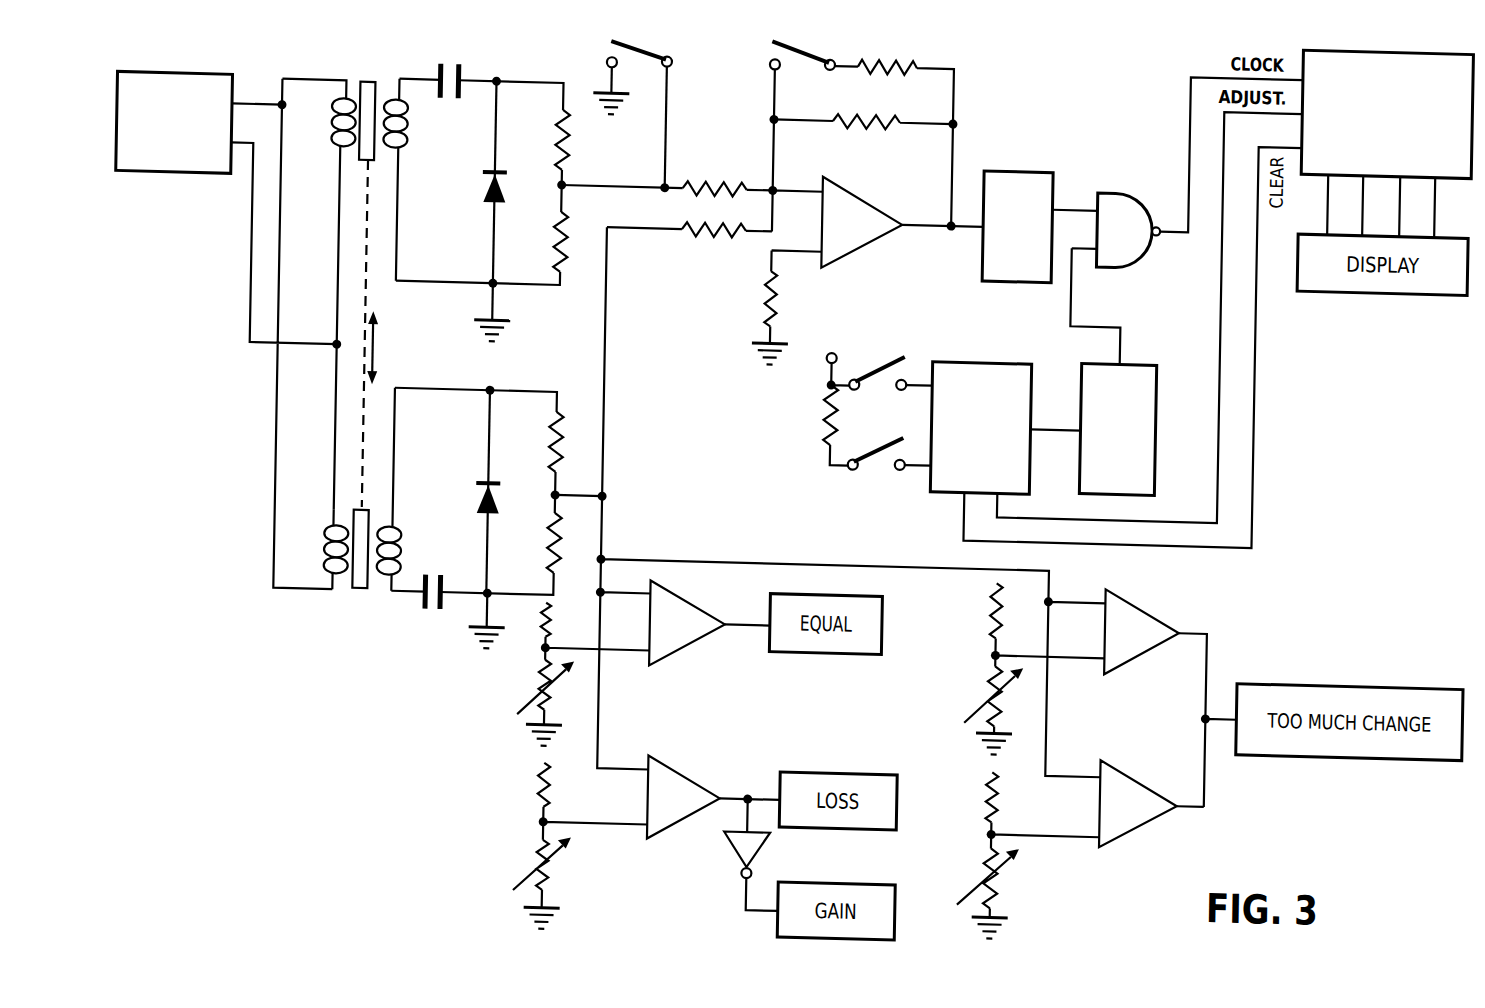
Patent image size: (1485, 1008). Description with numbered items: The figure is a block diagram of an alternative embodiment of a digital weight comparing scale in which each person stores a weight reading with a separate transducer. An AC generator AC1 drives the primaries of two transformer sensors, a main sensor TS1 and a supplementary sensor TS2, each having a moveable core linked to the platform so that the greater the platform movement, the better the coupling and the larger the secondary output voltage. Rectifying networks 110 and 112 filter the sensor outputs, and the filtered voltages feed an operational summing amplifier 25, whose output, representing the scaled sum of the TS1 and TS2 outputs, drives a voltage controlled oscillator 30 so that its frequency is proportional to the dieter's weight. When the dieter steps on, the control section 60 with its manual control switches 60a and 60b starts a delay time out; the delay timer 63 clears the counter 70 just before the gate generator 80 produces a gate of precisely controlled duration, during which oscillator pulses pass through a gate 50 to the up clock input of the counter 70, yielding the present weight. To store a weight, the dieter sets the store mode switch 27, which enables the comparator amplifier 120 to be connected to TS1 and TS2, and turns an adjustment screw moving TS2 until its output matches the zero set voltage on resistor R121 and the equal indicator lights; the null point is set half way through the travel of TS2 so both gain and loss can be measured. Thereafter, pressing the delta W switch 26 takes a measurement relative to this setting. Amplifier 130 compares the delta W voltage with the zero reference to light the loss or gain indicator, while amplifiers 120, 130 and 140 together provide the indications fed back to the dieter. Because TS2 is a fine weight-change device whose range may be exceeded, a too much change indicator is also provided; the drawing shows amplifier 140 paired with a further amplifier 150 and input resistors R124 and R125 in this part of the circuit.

The AC generator AC1 is at (194, 178).
The main sensor TS1 is at (367, 97).
The supplementary sensor TS2 is at (363, 599).
The rectifying network 110 is at (419, 231).
The rectifying network 112 is at (424, 455).
The delta W switch 26 is at (602, 49).
The store mode switch 27 is at (763, 44).
The operational summing amplifier 25 is at (836, 196).
The voltage controlled oscillator 30 is at (1016, 173).
The NAND gate 50 is at (1115, 190).
The counter 70 is at (1361, 46).
The control section 60 is at (825, 417).
The manual control switch 60a is at (880, 360).
The manual control switch 60b is at (880, 455).
The delay timer 63 is at (958, 369).
The gate generator 80 is at (1135, 365).
The comparator amplifier 120 is at (677, 647).
The amplifier 130 is at (678, 776).
The amplifier 140 is at (1158, 614).
The comparator amplifier 150 is at (1142, 820).
The zero set resistor R121 is at (547, 861).
The potentiometer R124 is at (994, 675).
The potentiometer R125 is at (1011, 884).